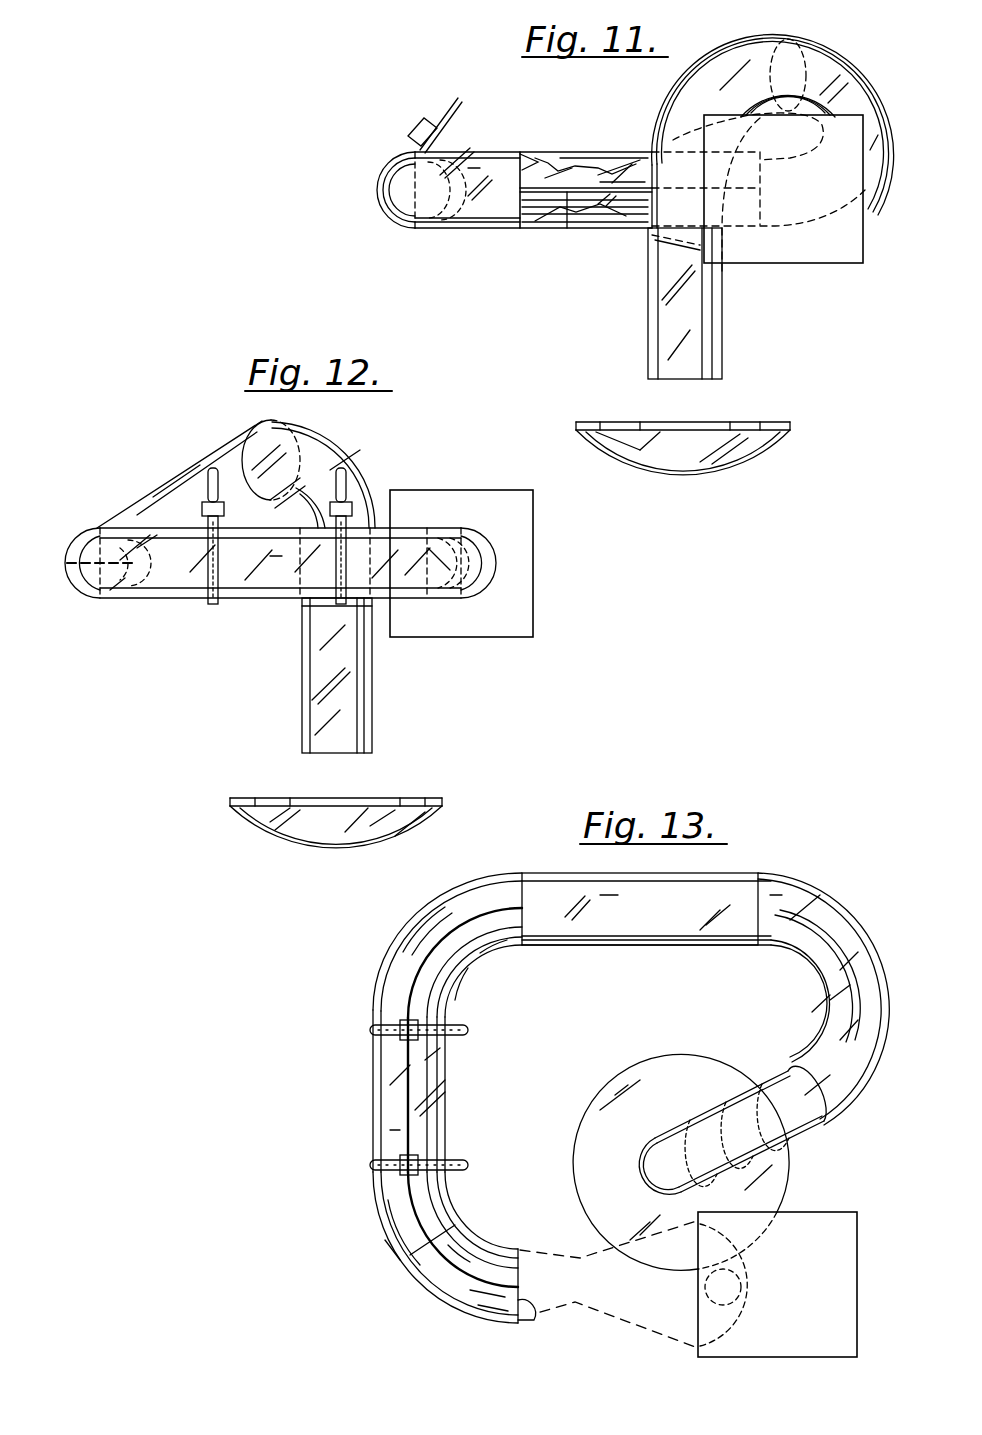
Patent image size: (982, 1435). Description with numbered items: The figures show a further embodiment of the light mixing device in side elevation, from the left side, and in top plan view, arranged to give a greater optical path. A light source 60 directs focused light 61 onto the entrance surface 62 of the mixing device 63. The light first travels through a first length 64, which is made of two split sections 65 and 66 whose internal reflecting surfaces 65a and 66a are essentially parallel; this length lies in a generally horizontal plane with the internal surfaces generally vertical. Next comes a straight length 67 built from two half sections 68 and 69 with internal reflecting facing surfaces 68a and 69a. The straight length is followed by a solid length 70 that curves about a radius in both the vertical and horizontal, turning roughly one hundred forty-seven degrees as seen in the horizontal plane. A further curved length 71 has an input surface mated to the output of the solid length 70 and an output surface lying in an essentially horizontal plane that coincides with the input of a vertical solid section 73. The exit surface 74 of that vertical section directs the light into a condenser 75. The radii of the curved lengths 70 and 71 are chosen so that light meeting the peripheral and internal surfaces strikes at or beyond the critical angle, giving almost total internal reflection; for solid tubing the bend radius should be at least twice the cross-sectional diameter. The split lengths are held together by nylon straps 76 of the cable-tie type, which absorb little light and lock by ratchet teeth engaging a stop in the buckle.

In FIG. 11, the light source 60 is at (752, 255).
In FIG. 12, the light source 60 is at (470, 486).
In FIG. 13, the light source 60 is at (735, 1308).
In FIG. 11, the focused light 61 is at (562, 165).
In FIG. 13, the focused light 61 is at (575, 1262).
In FIG. 11, the entrance surface 62 is at (527, 160).
In FIG. 13, the entrance surface 62 is at (540, 1308).
In FIG. 11, the mixing device 63 is at (610, 236).
In FIG. 12, the mixing device 63 is at (125, 613).
In FIG. 13, the mixing device 63 is at (824, 872).
In FIG. 11, the first length 64 is at (484, 205).
In FIG. 12, the first length 64 is at (428, 598).
In FIG. 13, the first length 64 is at (368, 1225).
In FIG. 11, the split section 65 is at (448, 178).
In FIG. 12, the split section 65 is at (438, 555).
In FIG. 13, the split section 65 is at (430, 1140).
In FIG. 11, the internal reflecting surface 65a is at (432, 226).
In FIG. 12, the internal reflecting surface 65a is at (466, 558).
In FIG. 13, the internal reflecting surface 65a is at (412, 1078).
In FIG. 11, the split section 66 is at (382, 186).
In FIG. 12, the split section 66 is at (262, 570).
In FIG. 13, the split section 66 is at (392, 1130).
In FIG. 11, the internal reflecting surface 66a is at (390, 209).
In FIG. 12, the internal reflecting surface 66a is at (484, 576).
In FIG. 13, the internal reflecting surface 66a is at (405, 1074).
In FIG. 11, the straight length 67 is at (608, 168).
In FIG. 12, the straight length 67 is at (135, 545).
In FIG. 13, the straight length 67 is at (618, 947).
In FIG. 11, the half section 68 is at (588, 156).
In FIG. 13, the half section 68 is at (572, 898).
In FIG. 11, the internal reflecting facing surface 68a is at (628, 192).
In FIG. 12, the internal reflecting facing surface 68a is at (85, 527).
In FIG. 11, the half section 69 is at (540, 217).
In FIG. 11, the internal reflecting facing surface 69a is at (566, 222).
In FIG. 12, the internal reflecting facing surface 69a is at (86, 586).
In FIG. 11, the solid length 70 is at (868, 100).
In FIG. 12, the solid length 70 is at (175, 480).
In FIG. 13, the solid length 70 is at (858, 928).
In FIG. 11, the curved length 71 is at (720, 82).
In FIG. 12, the curved length 71 is at (330, 466).
In FIG. 13, the curved length 71 is at (768, 1090).
In FIG. 11, the vertical solid section 73 is at (667, 322).
In FIG. 12, the vertical solid section 73 is at (306, 678).
In FIG. 11, the exit surface 74 is at (694, 380).
In FIG. 12, the exit surface 74 is at (332, 755).
In FIG. 11, the condenser 75 is at (742, 445).
In FIG. 12, the condenser 75 is at (382, 822).
In FIG. 13, the condenser 75 is at (680, 1070).
In FIG. 11, the nylon strap 76 is at (416, 132).
In FIG. 12, the nylon strap 76 is at (215, 575).
In FIG. 13, the nylon strap 76 is at (419, 1097).